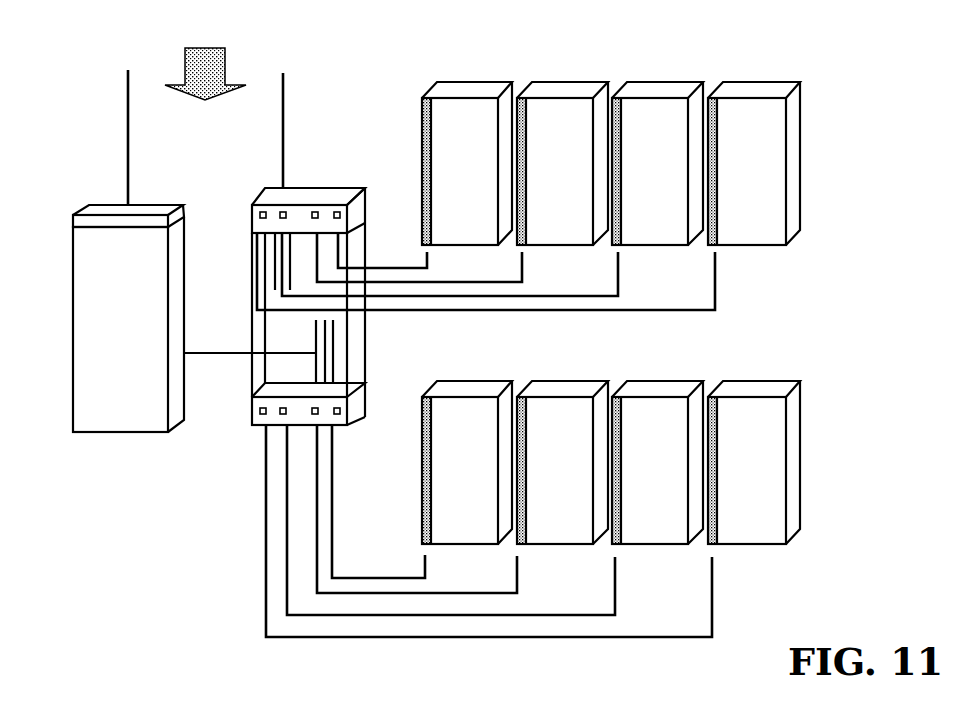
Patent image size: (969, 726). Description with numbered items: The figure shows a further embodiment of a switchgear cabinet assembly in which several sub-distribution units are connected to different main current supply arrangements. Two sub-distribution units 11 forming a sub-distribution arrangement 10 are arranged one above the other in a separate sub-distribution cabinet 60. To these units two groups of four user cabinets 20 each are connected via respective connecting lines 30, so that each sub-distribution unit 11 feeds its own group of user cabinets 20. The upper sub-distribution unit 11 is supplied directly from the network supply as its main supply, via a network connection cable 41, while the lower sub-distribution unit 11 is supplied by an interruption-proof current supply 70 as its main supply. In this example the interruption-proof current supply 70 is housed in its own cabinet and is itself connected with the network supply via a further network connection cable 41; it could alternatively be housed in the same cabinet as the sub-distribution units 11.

The sub-distribution arrangement 10 is at (449, 379).
The sub-distribution unit 11 is at (345, 188).
The user cabinet 20 is at (730, 80).
The connecting line 30 is at (393, 266).
The network connection cable 41 is at (128, 136).
The sub-distribution cabinet 60 is at (313, 178).
The interruption-proof current supply 70 is at (76, 208).